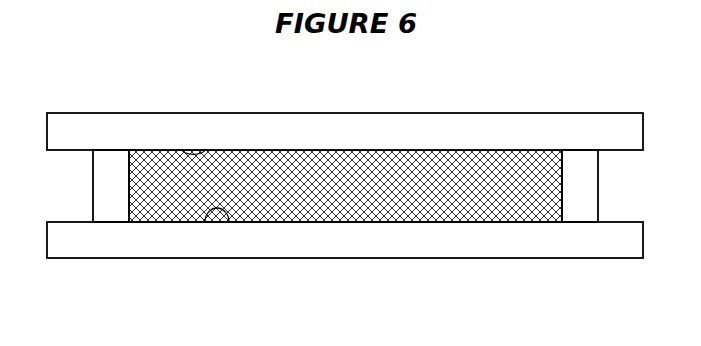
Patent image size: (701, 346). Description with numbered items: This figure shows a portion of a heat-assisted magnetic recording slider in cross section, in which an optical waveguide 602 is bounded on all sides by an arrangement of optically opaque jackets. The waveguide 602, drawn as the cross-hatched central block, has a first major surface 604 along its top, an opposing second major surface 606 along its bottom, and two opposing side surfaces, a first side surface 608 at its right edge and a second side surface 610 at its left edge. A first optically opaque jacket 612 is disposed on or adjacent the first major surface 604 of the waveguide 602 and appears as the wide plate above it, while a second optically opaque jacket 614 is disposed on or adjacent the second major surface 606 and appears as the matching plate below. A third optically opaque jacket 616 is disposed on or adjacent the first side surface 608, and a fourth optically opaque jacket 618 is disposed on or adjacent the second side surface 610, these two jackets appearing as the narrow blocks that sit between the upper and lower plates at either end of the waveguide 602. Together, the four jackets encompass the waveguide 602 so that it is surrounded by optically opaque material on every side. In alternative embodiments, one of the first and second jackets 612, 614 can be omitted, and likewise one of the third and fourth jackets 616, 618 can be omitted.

The optical waveguide 602 is at (370, 167).
The first major surface 604 is at (207, 150).
The second major surface 606 is at (205, 218).
The first side surface 608 is at (562, 193).
The second side surface 610 is at (130, 190).
The first optically opaque jacket 612 is at (602, 113).
The second optically opaque jacket 614 is at (610, 258).
The third optically opaque jacket 616 is at (598, 192).
The fourth optically opaque jacket 618 is at (93, 192).